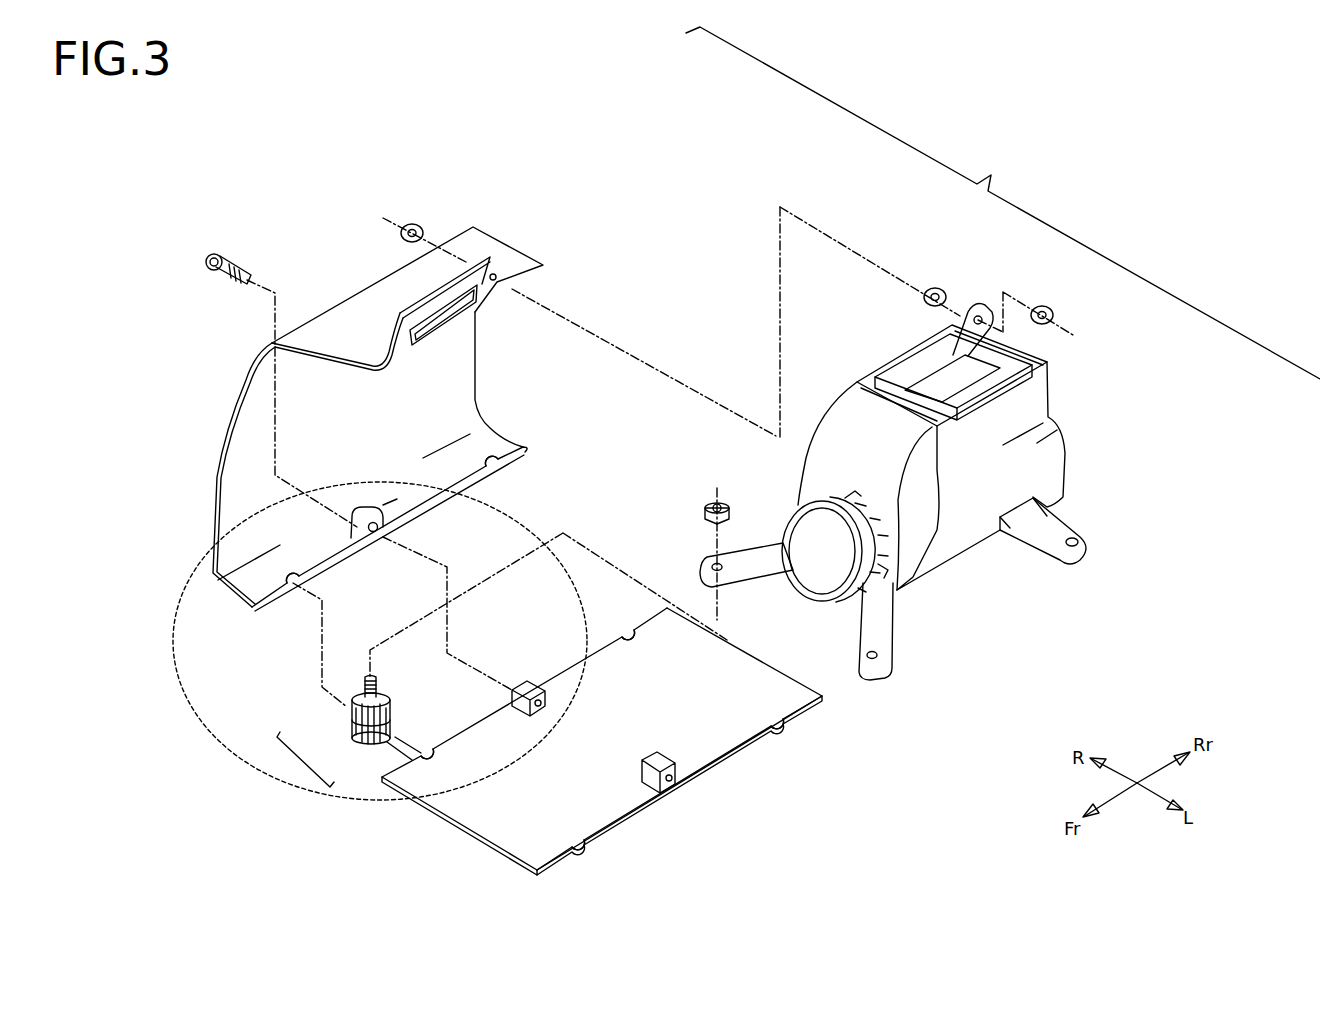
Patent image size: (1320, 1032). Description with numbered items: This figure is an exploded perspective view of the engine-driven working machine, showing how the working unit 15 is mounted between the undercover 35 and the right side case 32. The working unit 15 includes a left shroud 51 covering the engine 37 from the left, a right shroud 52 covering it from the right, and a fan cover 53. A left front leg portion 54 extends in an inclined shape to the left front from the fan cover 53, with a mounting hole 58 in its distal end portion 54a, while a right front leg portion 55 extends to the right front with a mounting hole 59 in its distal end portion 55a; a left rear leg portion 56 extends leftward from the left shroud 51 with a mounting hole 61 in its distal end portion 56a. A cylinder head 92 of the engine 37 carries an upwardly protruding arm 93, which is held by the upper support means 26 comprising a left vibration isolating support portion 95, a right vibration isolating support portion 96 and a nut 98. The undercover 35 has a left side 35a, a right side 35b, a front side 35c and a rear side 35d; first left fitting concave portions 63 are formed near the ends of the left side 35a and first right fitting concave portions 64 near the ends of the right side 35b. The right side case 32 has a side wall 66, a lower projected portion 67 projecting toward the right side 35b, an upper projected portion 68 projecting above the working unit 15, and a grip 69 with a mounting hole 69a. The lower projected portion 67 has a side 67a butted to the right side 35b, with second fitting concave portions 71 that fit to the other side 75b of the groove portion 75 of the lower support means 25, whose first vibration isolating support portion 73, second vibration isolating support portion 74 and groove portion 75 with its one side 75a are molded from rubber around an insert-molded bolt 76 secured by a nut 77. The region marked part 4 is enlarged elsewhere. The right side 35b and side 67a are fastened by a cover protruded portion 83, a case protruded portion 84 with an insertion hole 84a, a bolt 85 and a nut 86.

The part 4 is at (240, 766).
The working unit 15 is at (793, 410).
The lower support means 25 is at (345, 712).
The upper support means 26 is at (960, 275).
The right side case 32 is at (397, 431).
The undercover 35 is at (602, 734).
The left side 35a is at (733, 760).
The right side 35b is at (568, 663).
The front side 35c is at (458, 821).
The rear side 35d is at (750, 657).
The engine 37 is at (890, 380).
The left shroud 51 is at (1030, 406).
The right shroud 52 is at (900, 357).
The fan cover 53 is at (816, 470).
The left front leg portion 54 is at (886, 620).
The distal end portion 54a is at (885, 674).
The right front leg portion 55 is at (782, 548).
The distal end portion 55a is at (723, 587).
The left rear leg portion 56 is at (1060, 515).
The distal end portion 56a is at (1090, 543).
The mounting hole 58 is at (866, 655).
The mounting hole 59 is at (705, 562).
The mounting hole 61 is at (1054, 548).
The first left fitting concave portions 63 is at (781, 727).
The first right fitting concave portions 64 is at (428, 748).
The side wall 66 is at (455, 382).
The lower projected portion 67 is at (422, 492).
The side 67a is at (418, 505).
The upper projected portion 68 is at (377, 305).
The grip 69 is at (469, 322).
The mounting hole 69a is at (500, 281).
The second fitting concave portions 71 is at (500, 466).
The first vibration isolating support portion 73 is at (385, 698).
The second vibration isolating support portion 74 is at (394, 752).
The groove portion 75 is at (304, 760).
The one side of the groove portion 75a is at (378, 745).
The other side of the groove portion 75b is at (352, 728).
The bolt 76 is at (366, 678).
The nut 77 is at (708, 503).
The cover protruded portion 83 is at (521, 685).
The case protruded portion 84 is at (372, 510).
The insertion hole 84a is at (375, 545).
The bolt 85 is at (222, 271).
The nut 86 is at (523, 709).
The cylinder head 92 is at (937, 352).
The arm 93 is at (979, 314).
The left vibration isolating support portion 95 is at (1048, 306).
The right vibration isolating support portion 96 is at (934, 287).
The nut 98 is at (420, 226).